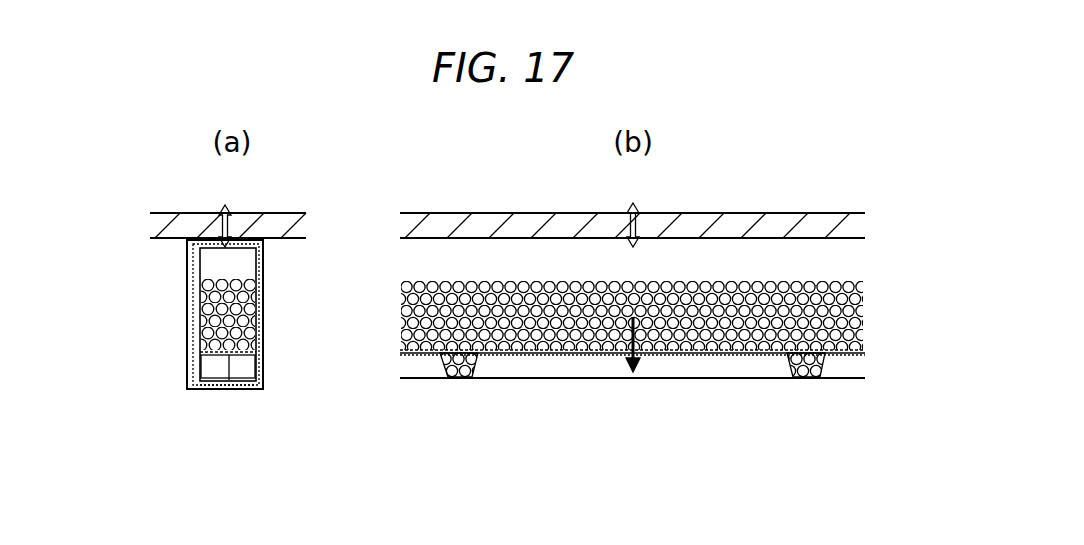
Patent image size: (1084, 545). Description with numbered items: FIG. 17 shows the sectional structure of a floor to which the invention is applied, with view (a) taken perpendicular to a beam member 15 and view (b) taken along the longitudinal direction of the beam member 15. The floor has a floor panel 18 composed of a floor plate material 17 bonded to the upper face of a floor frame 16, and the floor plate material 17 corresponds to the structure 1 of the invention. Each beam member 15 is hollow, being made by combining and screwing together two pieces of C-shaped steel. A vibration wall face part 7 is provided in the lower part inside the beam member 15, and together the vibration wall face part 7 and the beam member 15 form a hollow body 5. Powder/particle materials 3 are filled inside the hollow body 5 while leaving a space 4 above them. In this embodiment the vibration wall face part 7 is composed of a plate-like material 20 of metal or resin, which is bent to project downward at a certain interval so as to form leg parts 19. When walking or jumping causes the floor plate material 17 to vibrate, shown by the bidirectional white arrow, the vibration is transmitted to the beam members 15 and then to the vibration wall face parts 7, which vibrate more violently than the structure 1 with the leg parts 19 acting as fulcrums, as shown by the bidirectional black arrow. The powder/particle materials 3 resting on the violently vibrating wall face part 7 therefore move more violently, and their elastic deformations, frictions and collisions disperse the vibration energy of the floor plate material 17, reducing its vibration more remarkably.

The structure 1 is at (198, 213).
The powder/particle materials 3 is at (200, 282).
The space 4 is at (237, 258).
The hollow body 5 is at (263, 272).
The vibration wall face part 7 is at (229, 380).
The beam member 15 is at (188, 300).
The floor frame 16 is at (263, 350).
The floor plate material 17 is at (293, 213).
The floor panel 18 is at (760, 213).
The leg parts 19 is at (243, 378).
The plate-like material 20 is at (215, 366).